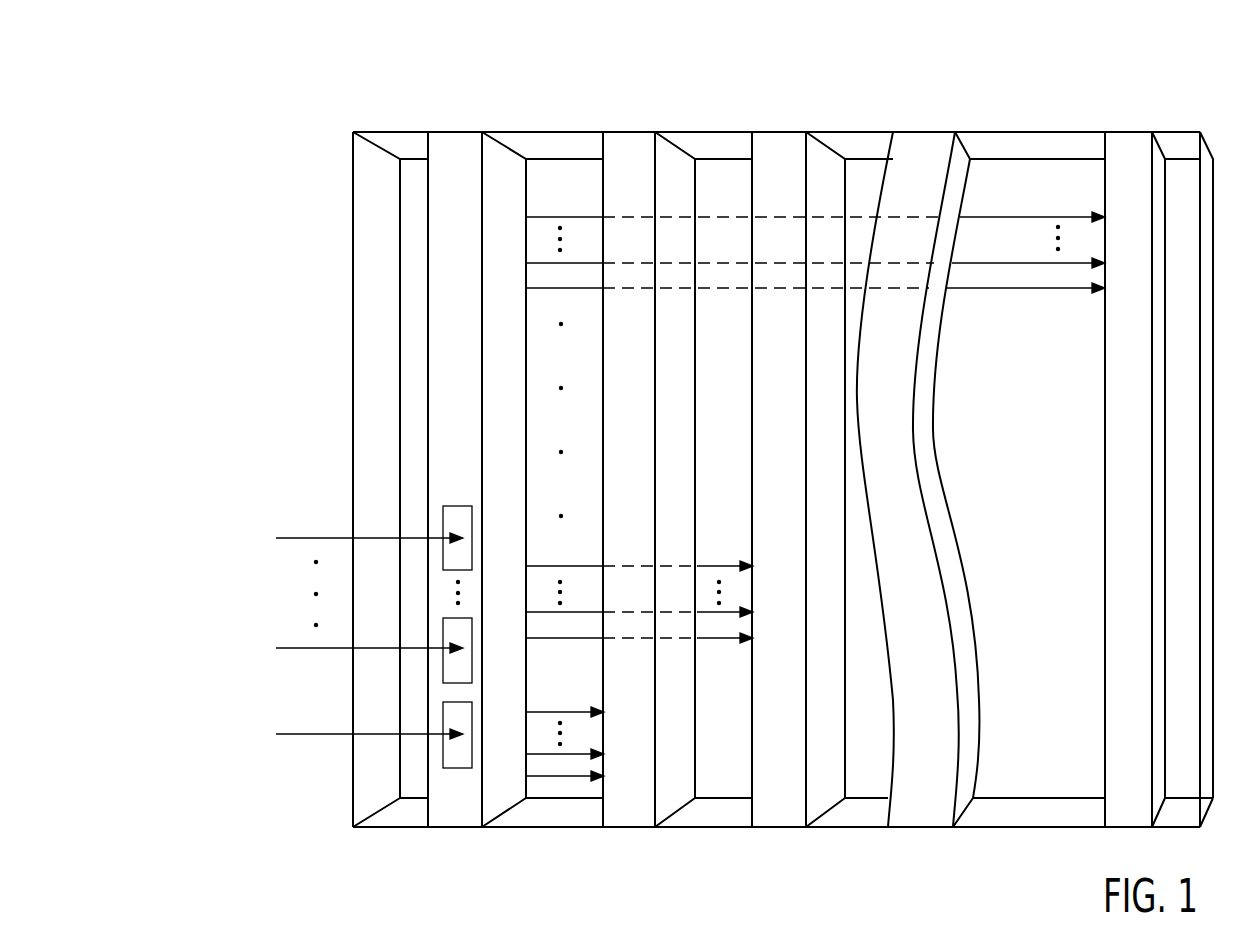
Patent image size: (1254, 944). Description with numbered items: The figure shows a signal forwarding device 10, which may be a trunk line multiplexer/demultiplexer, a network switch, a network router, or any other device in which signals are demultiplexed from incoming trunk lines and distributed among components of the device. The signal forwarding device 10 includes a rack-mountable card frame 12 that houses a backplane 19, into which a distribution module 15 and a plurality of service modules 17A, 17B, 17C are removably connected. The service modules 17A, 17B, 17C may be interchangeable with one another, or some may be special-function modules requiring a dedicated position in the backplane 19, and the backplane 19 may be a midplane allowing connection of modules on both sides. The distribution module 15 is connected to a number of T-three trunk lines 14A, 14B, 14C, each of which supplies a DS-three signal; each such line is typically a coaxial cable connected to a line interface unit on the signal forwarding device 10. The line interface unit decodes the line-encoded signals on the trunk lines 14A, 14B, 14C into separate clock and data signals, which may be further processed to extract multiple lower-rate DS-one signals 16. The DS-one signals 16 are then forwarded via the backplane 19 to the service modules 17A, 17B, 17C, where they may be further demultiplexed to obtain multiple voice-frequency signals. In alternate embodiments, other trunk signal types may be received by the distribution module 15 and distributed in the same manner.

The signal forwarding device 10 is at (280, 165).
The rack-mountable card frame 12 is at (1008, 827).
The T3 line 14A is at (287, 774).
The T3 line 14B is at (287, 688).
The T3 line 14C is at (287, 576).
The distribution module 15 is at (442, 283).
The DS-1 signals 16 is at (557, 777).
The service module 17A is at (630, 143).
The service module 17B is at (768, 143).
The service module 17C is at (1117, 140).
The backplane 19 is at (1048, 461).